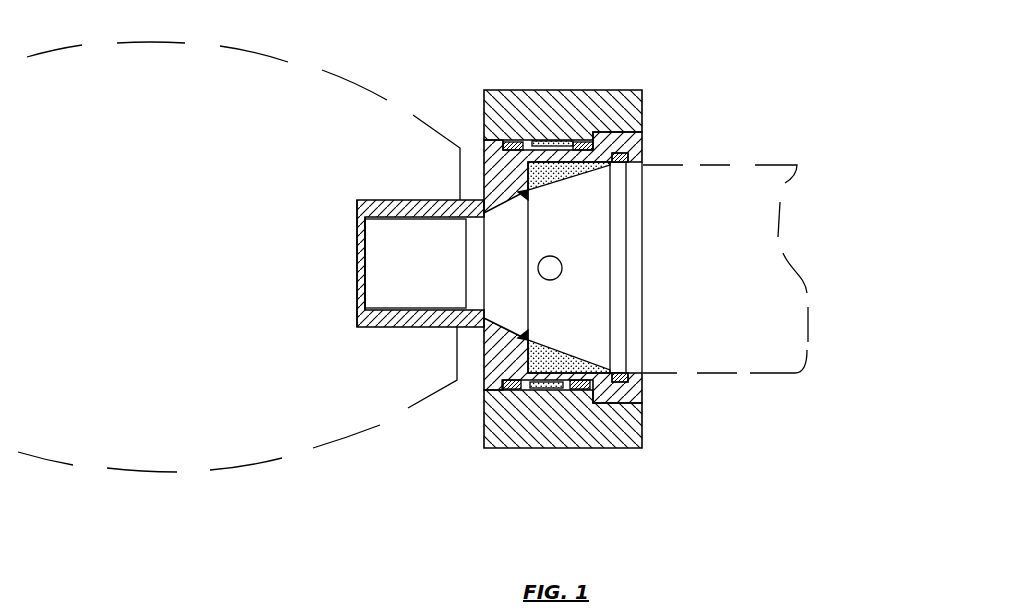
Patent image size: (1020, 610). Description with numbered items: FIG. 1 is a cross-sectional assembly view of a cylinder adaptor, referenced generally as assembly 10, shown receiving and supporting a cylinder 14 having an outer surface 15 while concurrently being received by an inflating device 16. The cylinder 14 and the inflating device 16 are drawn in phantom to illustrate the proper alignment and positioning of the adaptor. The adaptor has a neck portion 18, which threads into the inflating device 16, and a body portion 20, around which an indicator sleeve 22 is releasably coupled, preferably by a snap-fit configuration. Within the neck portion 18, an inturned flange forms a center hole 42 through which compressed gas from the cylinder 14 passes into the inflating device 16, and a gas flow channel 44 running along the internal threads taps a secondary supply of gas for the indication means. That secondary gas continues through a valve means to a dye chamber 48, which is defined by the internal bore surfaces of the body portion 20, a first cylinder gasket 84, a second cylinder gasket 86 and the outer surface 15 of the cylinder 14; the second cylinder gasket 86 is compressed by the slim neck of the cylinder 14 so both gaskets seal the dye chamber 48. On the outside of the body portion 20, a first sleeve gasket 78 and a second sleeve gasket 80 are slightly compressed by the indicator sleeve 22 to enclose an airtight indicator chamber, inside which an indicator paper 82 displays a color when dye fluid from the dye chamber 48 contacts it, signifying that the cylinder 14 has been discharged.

The coupling assembly 10 is at (783, 55).
The cylinder 14 is at (815, 320).
The outer surface 15 is at (760, 378).
The inflating device 16 is at (370, 434).
The neck portion 18 is at (357, 198).
The body portion 20 is at (650, 147).
The indicator sleeve 22 is at (593, 86).
The center hole 42 is at (360, 274).
The gas flow channel 44 is at (363, 237).
The dye chamber 48 is at (565, 192).
The first sleeve gasket 78 is at (503, 392).
The second sleeve gasket 80 is at (578, 392).
The indicator paper 82 is at (542, 392).
The first cylinder gasket 84 is at (624, 381).
The second cylinder gasket 86 is at (500, 338).